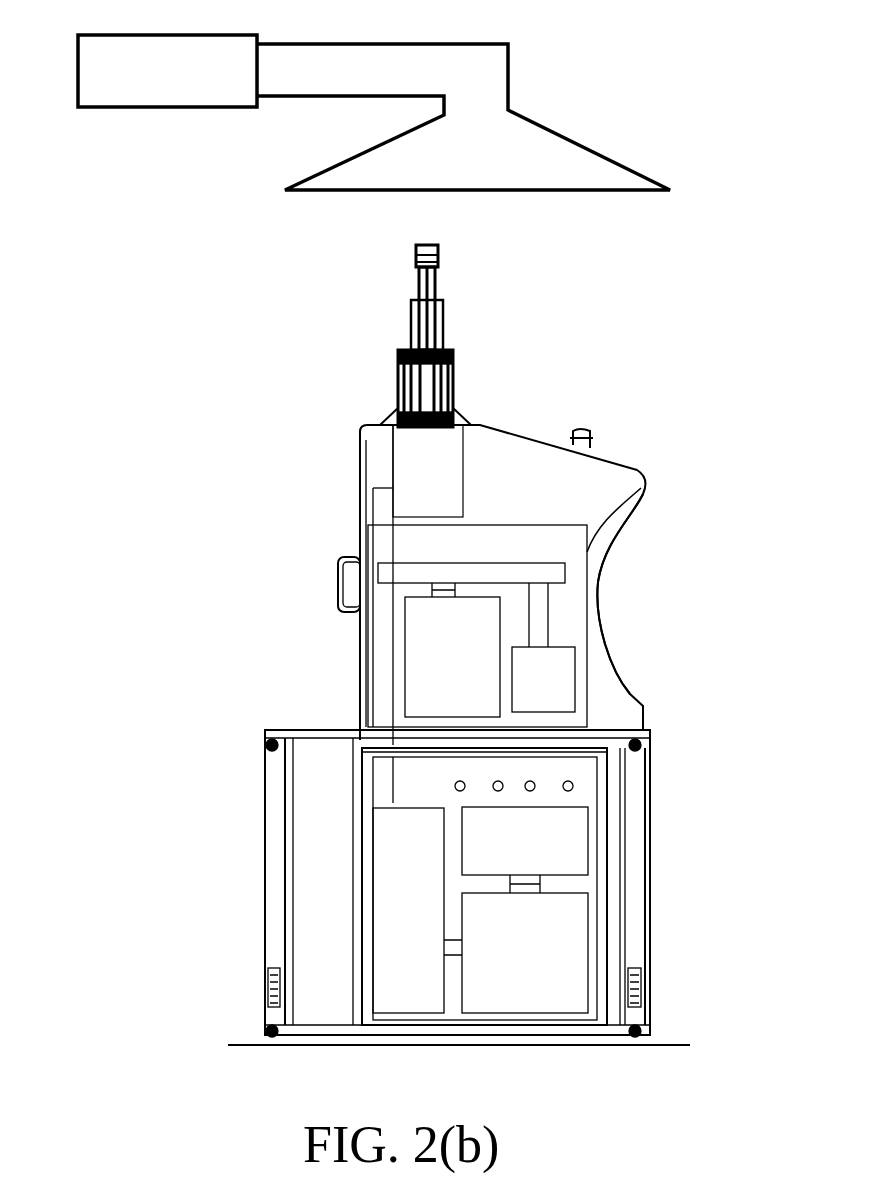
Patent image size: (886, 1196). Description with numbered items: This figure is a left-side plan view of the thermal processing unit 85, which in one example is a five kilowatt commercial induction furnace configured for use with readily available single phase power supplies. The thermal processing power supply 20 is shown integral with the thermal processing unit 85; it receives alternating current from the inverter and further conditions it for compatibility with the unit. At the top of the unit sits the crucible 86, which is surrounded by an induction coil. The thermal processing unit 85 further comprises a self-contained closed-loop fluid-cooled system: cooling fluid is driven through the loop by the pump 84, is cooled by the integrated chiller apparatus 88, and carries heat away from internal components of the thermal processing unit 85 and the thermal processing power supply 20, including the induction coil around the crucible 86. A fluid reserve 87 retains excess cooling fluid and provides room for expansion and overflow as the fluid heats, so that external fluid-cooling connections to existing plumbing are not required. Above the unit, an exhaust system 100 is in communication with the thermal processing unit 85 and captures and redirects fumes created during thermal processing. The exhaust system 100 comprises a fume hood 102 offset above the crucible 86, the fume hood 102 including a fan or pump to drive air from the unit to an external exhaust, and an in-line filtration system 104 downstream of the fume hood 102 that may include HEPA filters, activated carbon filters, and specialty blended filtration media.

The exhaust system 100 is at (404, 102).
The fume hood 102 is at (655, 185).
The in-line filtration system 104 is at (125, 108).
The thermal processing unit 85 is at (627, 348).
The crucible 86 is at (390, 441).
The thermal processing power supply 20 is at (620, 516).
The fluid reserve 87 is at (587, 851).
The integrated chiller apparatus 88 is at (378, 914).
The pump 84 is at (585, 990).